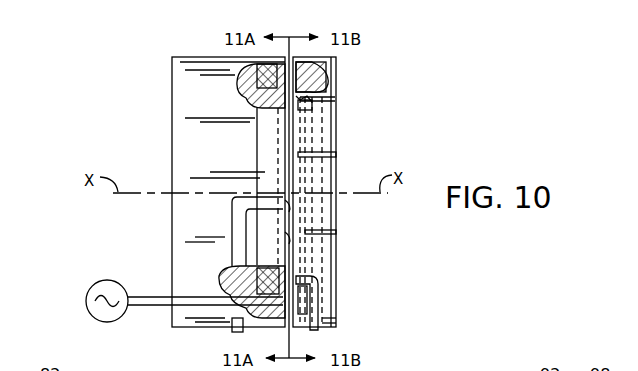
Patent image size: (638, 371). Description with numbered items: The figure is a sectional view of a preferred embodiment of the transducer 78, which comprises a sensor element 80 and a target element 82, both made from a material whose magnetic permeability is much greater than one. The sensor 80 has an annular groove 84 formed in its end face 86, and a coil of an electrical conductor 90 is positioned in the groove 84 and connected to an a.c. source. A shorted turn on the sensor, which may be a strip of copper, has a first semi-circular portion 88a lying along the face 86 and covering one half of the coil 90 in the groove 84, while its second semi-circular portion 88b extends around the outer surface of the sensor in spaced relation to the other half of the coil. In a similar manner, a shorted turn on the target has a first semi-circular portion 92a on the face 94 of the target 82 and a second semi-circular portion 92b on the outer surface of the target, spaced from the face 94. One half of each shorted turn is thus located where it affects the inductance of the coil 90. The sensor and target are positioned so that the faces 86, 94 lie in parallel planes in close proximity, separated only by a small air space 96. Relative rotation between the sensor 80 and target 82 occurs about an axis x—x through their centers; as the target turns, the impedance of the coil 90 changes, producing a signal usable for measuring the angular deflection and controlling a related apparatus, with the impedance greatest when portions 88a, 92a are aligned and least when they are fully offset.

The transducer 78 is at (148, 112).
The sensor element 80 is at (172, 74).
The target element 82 is at (337, 120).
The annular groove 84 is at (262, 318).
The end face 86 is at (287, 170).
The first semi-circular portion 88a is at (260, 62).
The second semi-circular portion 88b is at (238, 226).
The coil of an electrical conductor 90 is at (240, 272).
The first semi-circular portion 92a is at (325, 78).
The second semi-circular portion 92b is at (325, 292).
The face 94 is at (288, 228).
The air space 96 is at (290, 208).